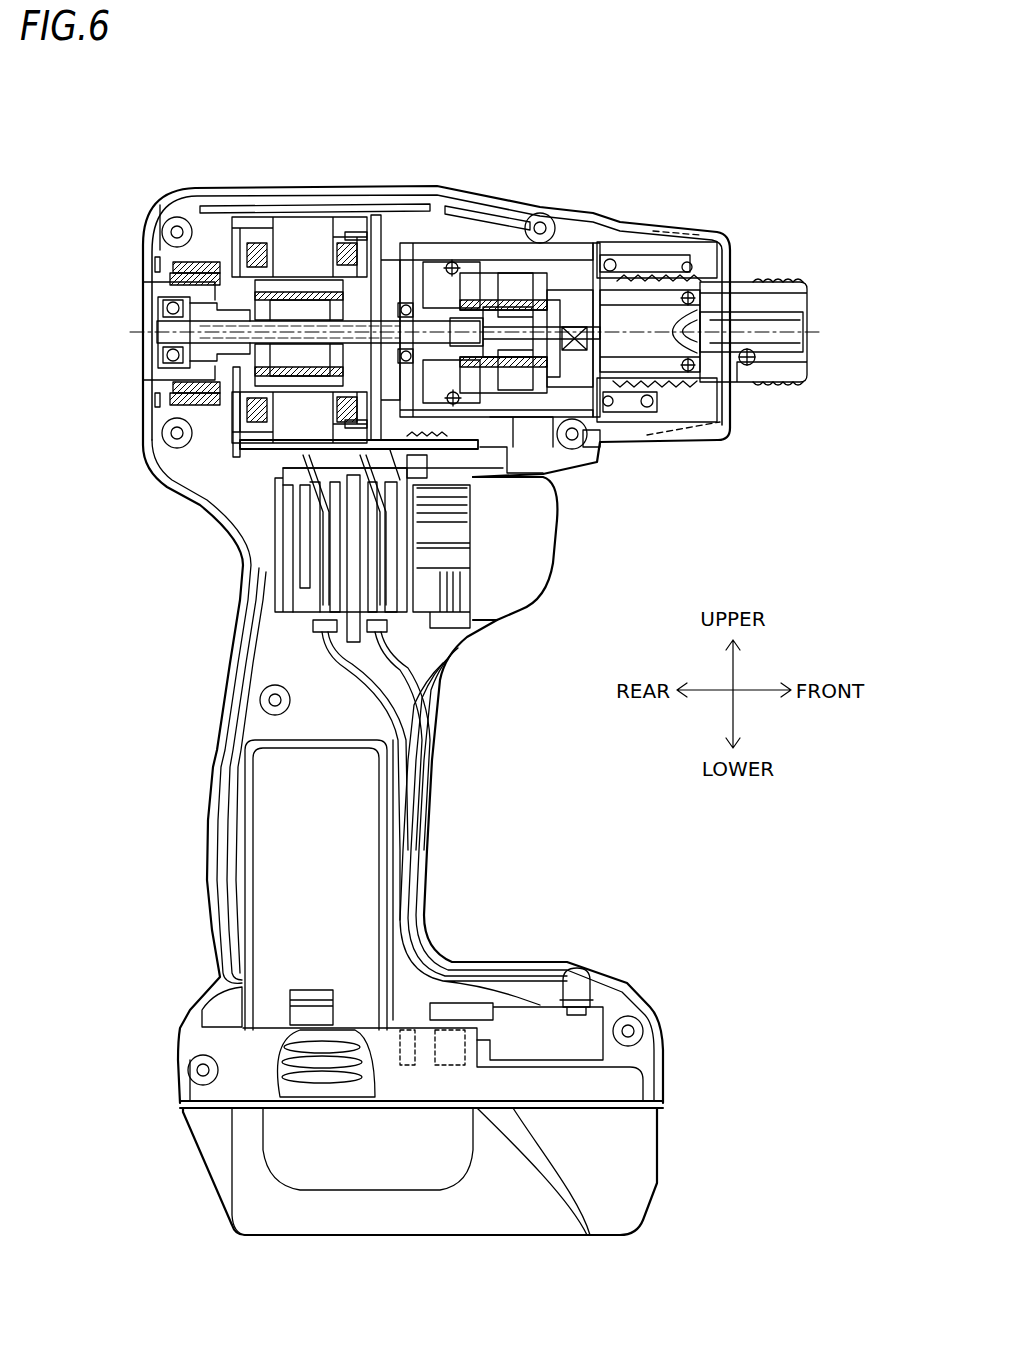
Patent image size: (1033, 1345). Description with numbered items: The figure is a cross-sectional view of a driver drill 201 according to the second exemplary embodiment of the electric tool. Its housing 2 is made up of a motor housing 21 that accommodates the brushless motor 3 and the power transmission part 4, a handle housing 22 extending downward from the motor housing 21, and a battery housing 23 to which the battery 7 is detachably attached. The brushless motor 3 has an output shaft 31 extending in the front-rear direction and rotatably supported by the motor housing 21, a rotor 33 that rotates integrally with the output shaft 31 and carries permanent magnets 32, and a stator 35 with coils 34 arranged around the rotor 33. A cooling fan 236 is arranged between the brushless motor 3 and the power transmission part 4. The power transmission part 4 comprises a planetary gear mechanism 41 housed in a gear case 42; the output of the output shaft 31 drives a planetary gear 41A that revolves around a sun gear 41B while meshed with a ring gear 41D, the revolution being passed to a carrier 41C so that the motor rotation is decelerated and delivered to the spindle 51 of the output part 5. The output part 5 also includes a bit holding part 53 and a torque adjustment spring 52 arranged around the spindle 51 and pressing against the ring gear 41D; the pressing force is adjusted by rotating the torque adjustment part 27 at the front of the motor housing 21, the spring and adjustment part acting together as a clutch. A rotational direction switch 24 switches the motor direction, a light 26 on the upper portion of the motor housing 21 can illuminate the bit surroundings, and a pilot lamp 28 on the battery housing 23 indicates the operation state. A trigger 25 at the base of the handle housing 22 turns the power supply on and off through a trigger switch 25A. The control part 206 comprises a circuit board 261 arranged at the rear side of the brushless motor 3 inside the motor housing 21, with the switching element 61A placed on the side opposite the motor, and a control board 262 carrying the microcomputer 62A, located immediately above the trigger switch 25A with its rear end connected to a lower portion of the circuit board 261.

The housing 2 is at (257, 183).
The motor housing 21 is at (553, 215).
The handle housing 22 is at (447, 740).
The battery housing 23 is at (478, 963).
The rotational direction switch 24 is at (452, 460).
The trigger 25 is at (523, 580).
The trigger switch 25A is at (350, 568).
The light 26 is at (573, 237).
The torque adjustment part 27 is at (683, 437).
The pilot lamp 28 is at (571, 968).
The brushless motor 3 is at (322, 313).
The output shaft 31 is at (203, 325).
The permanent magnets 32 is at (290, 290).
The rotor 33 is at (318, 298).
The coils 34 is at (262, 222).
The stator 35 is at (330, 238).
The power transmission part 4 is at (578, 220).
The planetary gear mechanism 41 is at (410, 132).
The planetary gear 41A is at (467, 318).
The sun gear 41B is at (505, 273).
The carrier 41C is at (520, 275).
The ring gear 41D is at (450, 262).
The gear case 42 is at (598, 446).
The output part 5 is at (674, 251).
The spindle 51 is at (770, 340).
The torque adjustment spring 52 is at (647, 407).
The bit holding part 53 is at (787, 282).
The switching element 61A is at (170, 392).
The microcomputer 62A is at (430, 470).
The battery 7 is at (603, 1150).
The driver drill 201 is at (711, 159).
The control part 206 is at (220, 452).
The cooling fan 236 is at (390, 290).
The circuit board 261 is at (160, 437).
The control board 262 is at (263, 437).